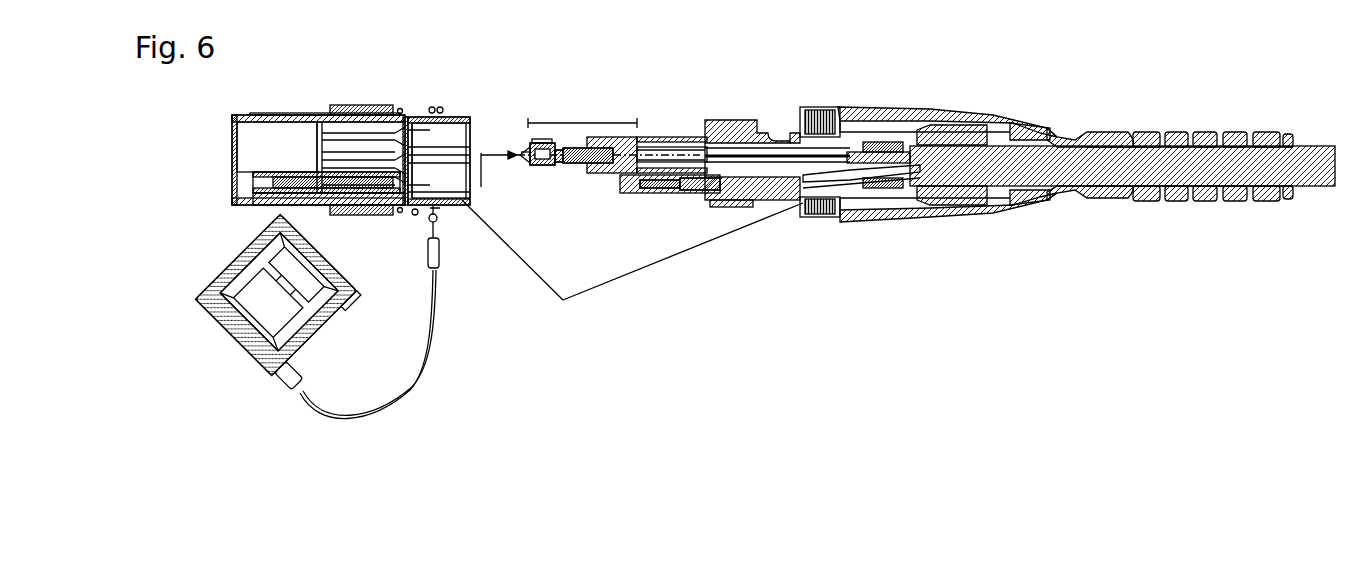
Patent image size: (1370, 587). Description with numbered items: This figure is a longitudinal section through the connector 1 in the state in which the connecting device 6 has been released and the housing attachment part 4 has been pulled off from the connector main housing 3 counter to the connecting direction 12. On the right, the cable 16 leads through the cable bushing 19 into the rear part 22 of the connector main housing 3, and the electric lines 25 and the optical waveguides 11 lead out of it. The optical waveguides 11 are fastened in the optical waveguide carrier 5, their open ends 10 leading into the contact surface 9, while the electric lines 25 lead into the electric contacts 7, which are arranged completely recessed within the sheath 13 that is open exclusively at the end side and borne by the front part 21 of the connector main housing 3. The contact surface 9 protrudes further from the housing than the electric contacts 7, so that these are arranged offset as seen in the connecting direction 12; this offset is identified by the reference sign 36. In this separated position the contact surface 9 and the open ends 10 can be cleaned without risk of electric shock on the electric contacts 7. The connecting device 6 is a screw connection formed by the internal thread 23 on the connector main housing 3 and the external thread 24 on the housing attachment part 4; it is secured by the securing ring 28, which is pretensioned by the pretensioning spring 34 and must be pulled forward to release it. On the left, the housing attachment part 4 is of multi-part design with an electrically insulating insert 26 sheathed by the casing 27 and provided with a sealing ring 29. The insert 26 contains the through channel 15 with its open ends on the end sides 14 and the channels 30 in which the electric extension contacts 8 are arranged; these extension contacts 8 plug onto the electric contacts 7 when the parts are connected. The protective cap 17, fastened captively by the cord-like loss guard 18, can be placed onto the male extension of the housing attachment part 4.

The connector 1 is at (929, 145).
The connector main housing 3 is at (1018, 220).
The housing attachment part 4 is at (375, 105).
The optical waveguide carrier 5 is at (555, 166).
The connecting device 6 is at (632, 266).
The electric contacts 7 is at (693, 190).
The electric extension contacts 8 is at (328, 182).
The contact surface 9 is at (528, 158).
The open ends 10 is at (528, 152).
The optical waveguides 11 is at (662, 152).
The connecting direction 12 is at (466, 199).
The sheath 13 is at (665, 193).
The end sides 14 is at (247, 150).
The through channel 15 is at (335, 145).
The cable 16 is at (1260, 168).
The protective cap 17 is at (228, 345).
The loss guard 18 is at (432, 343).
The cable bushing 19 is at (1117, 133).
The front part 21 is at (740, 125).
The rear part 22 is at (955, 112).
The internal thread 23 is at (820, 218).
The external thread 24 is at (455, 122).
The electric lines 25 is at (838, 178).
The insert 26 is at (250, 202).
The casing 27 is at (275, 115).
The securing ring 28 is at (437, 107).
The sealing ring 29 is at (437, 222).
The channels 30 is at (260, 180).
The pretensioning spring 34 is at (415, 216).
The offset 36 is at (578, 121).